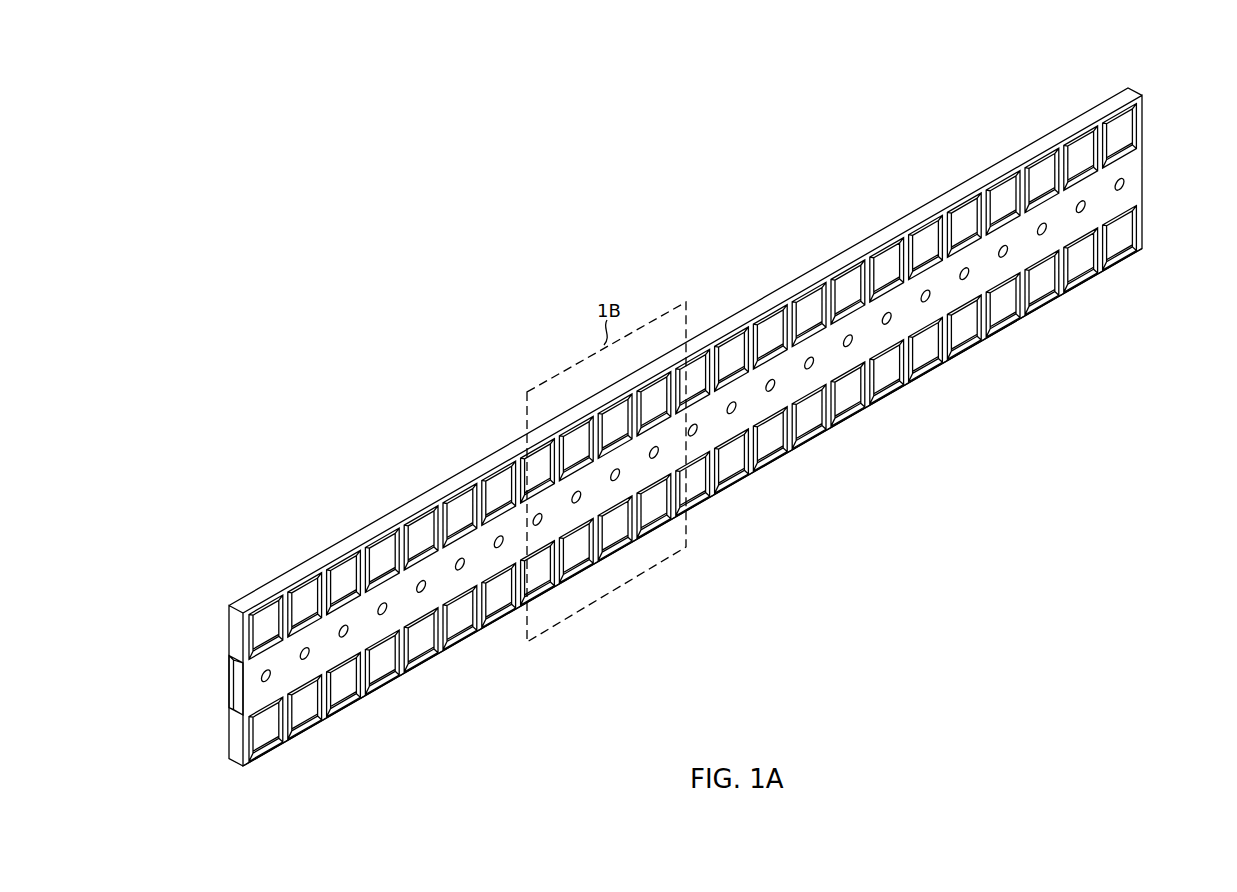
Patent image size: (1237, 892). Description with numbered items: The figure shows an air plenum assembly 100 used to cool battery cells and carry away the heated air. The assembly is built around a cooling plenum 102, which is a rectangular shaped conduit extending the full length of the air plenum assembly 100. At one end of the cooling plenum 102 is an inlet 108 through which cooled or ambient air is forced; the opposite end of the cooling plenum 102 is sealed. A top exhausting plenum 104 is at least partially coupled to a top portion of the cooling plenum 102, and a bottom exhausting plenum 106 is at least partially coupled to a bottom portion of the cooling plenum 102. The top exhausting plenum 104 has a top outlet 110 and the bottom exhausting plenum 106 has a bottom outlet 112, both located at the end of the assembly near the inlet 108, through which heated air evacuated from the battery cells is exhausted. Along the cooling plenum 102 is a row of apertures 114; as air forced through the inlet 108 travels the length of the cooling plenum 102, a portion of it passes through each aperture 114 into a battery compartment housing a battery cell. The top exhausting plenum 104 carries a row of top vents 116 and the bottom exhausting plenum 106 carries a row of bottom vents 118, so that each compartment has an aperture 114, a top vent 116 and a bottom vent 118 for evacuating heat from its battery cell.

The air plenum assembly 100 is at (683, 425).
The cooling plenum 102 is at (1144, 160).
The top exhausting plenum 104 is at (913, 209).
The bottom exhausting plenum 106 is at (980, 343).
The inlet 108 is at (227, 687).
The top outlet 110 is at (737, 372).
The bottom outlet 112 is at (737, 472).
The aperture 114 is at (431, 592).
The top vent 116 is at (420, 525).
The bottom vent 118 is at (383, 660).